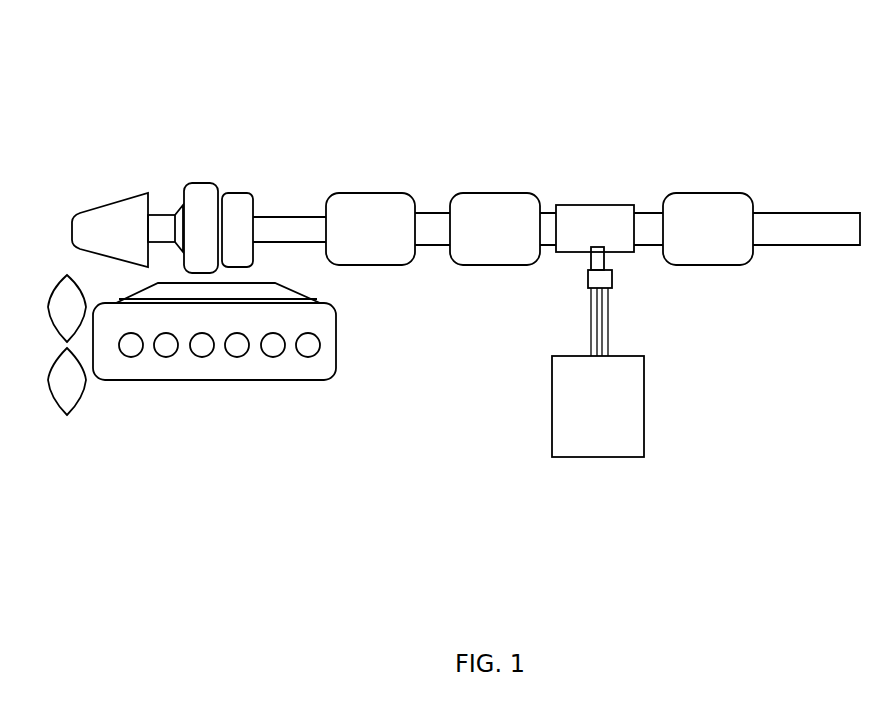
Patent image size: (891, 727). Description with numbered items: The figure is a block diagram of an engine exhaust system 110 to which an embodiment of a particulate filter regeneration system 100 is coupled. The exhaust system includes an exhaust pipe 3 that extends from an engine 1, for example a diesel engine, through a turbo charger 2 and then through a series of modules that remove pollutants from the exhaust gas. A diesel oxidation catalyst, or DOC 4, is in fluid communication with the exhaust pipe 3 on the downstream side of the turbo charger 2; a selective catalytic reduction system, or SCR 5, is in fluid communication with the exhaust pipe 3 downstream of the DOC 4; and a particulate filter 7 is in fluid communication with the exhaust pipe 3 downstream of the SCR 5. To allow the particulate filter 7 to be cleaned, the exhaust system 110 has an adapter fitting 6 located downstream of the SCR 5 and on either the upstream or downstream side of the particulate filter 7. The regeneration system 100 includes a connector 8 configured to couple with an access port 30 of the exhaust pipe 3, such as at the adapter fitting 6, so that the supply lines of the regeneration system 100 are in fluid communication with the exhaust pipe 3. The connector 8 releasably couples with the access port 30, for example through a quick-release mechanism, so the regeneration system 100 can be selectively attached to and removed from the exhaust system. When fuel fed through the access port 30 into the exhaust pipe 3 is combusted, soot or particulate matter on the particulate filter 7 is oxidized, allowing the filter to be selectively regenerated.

The engine 1 is at (152, 383).
The turbo charger 2 is at (235, 190).
The exhaust pipe 3 is at (297, 213).
The diesel oxidation catalyst (DOC) 4 is at (368, 192).
The selective catalytic reduction system (SCR) 5 is at (495, 192).
The adapter fitting 6 is at (593, 204).
The particulate filter 7 is at (707, 192).
The connector 8 is at (588, 283).
The access port 30 is at (607, 258).
The particulate filter regeneration system 100 is at (540, 403).
The engine exhaust system 110 is at (498, 51).